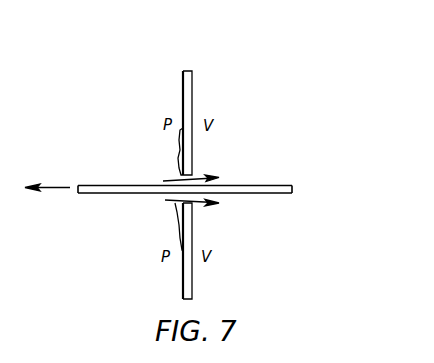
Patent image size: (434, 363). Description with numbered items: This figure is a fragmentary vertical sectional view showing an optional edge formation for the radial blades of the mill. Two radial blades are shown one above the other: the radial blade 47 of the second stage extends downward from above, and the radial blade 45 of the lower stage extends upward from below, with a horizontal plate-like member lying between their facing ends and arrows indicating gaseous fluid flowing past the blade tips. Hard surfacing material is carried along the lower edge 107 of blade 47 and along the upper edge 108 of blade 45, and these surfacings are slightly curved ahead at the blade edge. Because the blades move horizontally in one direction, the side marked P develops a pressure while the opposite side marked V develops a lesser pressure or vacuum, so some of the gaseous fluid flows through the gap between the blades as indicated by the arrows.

The radial blade 47 is at (190, 96).
The radial blade 45 is at (190, 281).
The lower edge 107 is at (180, 170).
The upper edge 108 is at (178, 215).